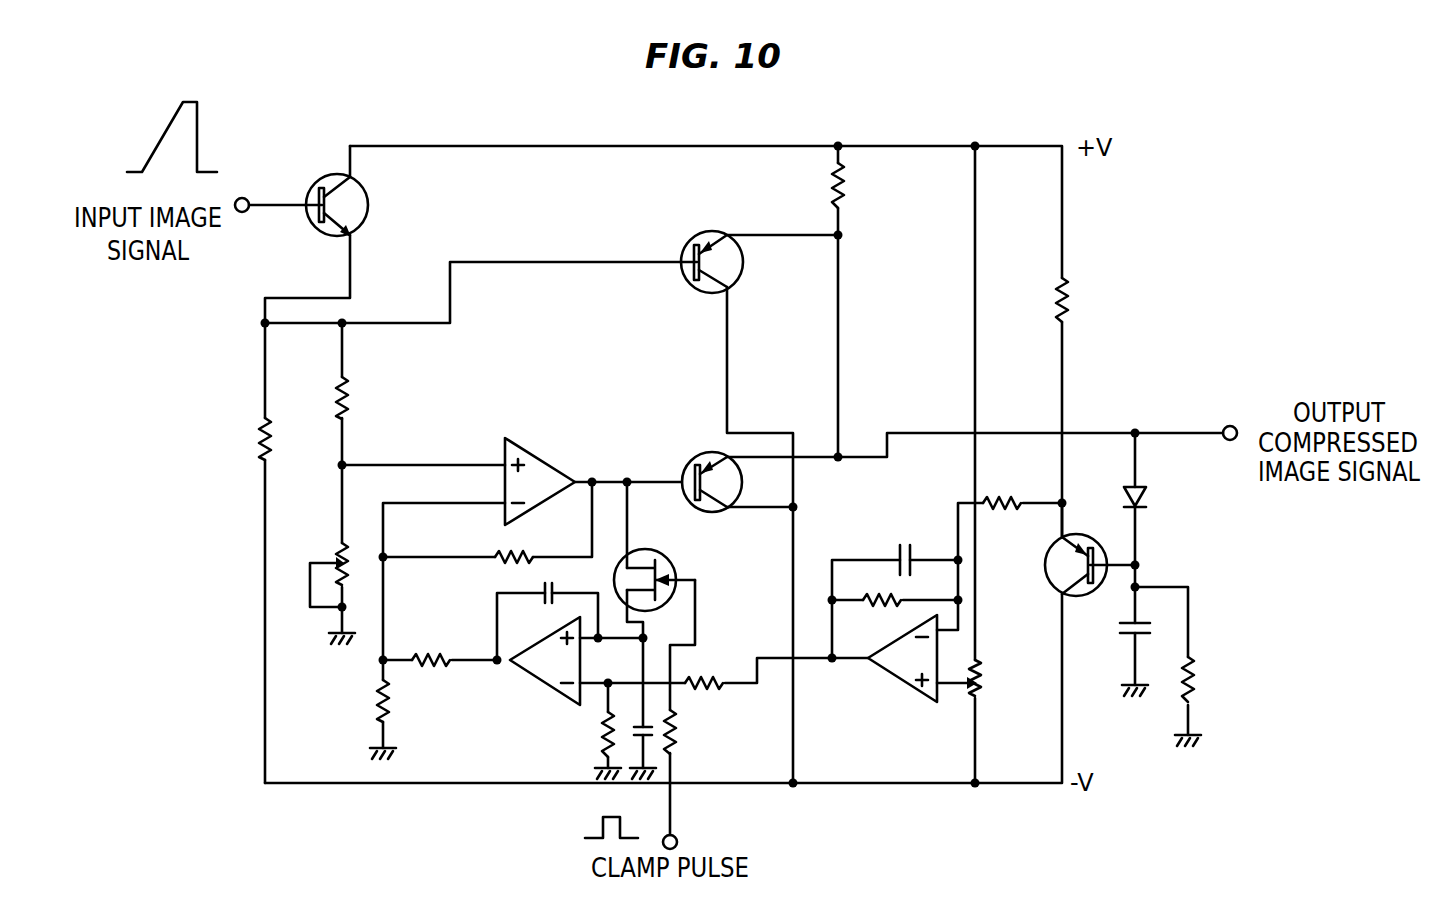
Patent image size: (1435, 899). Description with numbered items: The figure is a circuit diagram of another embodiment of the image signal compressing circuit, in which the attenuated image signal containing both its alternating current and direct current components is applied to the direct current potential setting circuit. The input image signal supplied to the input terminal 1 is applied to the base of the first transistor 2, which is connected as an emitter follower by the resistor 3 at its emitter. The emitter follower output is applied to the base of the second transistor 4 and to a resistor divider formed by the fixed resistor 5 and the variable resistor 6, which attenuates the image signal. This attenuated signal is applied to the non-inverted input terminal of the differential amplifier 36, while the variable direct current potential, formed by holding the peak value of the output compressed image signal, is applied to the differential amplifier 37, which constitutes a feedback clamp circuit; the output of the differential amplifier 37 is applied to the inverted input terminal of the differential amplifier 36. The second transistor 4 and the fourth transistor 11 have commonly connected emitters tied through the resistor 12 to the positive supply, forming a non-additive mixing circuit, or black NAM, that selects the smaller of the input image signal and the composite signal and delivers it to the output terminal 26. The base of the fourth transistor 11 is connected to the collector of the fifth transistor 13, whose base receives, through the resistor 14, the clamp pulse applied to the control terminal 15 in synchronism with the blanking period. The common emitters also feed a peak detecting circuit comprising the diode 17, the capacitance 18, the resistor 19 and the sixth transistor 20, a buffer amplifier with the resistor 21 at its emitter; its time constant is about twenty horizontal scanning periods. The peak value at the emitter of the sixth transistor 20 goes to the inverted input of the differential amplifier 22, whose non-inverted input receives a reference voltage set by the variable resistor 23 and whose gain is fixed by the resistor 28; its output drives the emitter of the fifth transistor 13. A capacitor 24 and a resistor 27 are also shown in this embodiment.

The input terminal 1 is at (242, 198).
The first transistor 2 is at (332, 177).
The resistor 3 is at (258, 445).
The second transistor 4 is at (715, 233).
The fixed resistor 5 is at (348, 393).
The variable resistor 6 is at (349, 563).
The fourth transistor 11 is at (713, 452).
The resistor 12 is at (845, 207).
The fifth transistor 13 is at (653, 550).
The resistor 14 is at (682, 738).
The control terminal 15 is at (675, 836).
The diode 17 is at (1148, 497).
The capacitance 18 is at (1118, 627).
The resistor 19 is at (1200, 670).
The sixth transistor 20 is at (1095, 548).
The resistor 21 is at (1067, 318).
The differential amplifier 22 is at (895, 680).
The variable resistor 23 is at (967, 695).
The capacitor 24 is at (893, 517).
The output terminal 26 is at (1230, 424).
The resistor 27 is at (1017, 508).
The resistor 28 is at (892, 612).
The differential amplifier 36 is at (533, 452).
The differential amplifier 37 is at (545, 690).